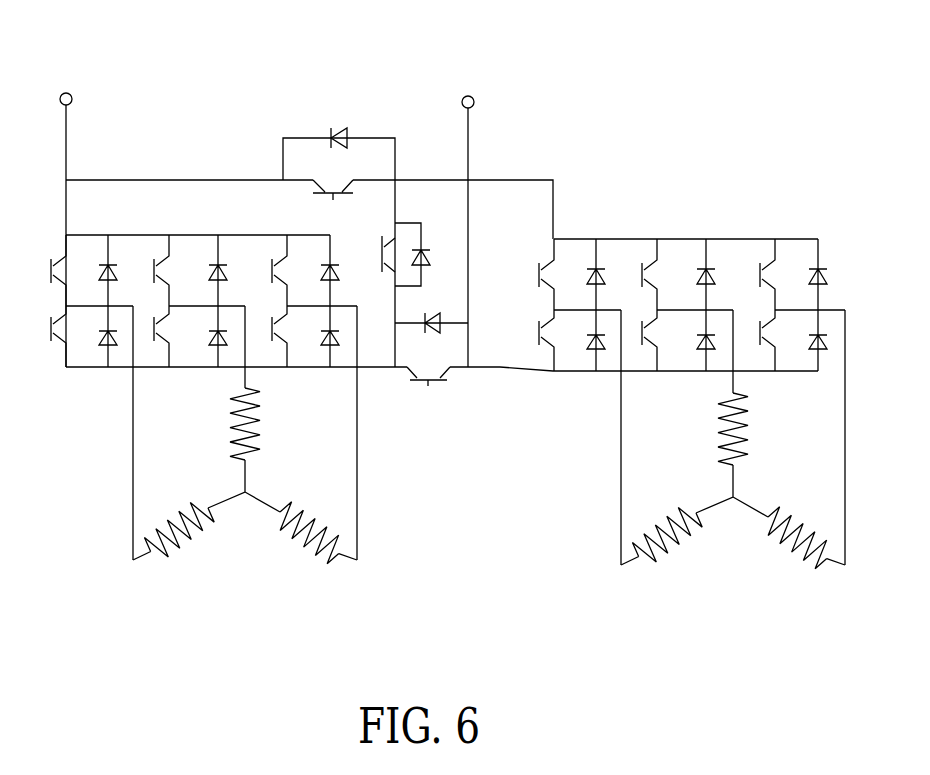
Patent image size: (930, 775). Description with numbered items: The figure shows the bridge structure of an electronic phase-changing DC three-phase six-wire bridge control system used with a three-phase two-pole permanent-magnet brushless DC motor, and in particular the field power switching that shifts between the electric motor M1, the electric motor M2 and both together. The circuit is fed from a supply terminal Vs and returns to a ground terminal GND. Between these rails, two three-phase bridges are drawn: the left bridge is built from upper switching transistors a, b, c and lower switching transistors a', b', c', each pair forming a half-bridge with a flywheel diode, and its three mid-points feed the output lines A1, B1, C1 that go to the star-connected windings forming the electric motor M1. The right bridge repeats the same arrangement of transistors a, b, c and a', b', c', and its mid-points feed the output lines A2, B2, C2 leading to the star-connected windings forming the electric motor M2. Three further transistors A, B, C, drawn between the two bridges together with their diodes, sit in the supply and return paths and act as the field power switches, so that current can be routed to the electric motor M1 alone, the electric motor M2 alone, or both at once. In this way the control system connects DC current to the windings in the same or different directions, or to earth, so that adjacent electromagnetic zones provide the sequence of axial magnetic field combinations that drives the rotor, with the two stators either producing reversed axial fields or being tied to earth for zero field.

The supply voltage terminal Vs is at (64, 113).
The ground terminal GND is at (477, 207).
The upper switching transistor, phase a is at (286, 272).
The lower switching transistor, phase a a' is at (286, 333).
The upper switching transistor, phase b is at (393, 272).
The lower switching transistor, phase b b' is at (394, 334).
The upper switching transistor, phase c is at (512, 272).
The lower switching transistor, phase c c' is at (512, 333).
The transistor A is at (428, 397).
The transistor B with diode B is at (393, 254).
The transistor C is at (333, 209).
The output node A1 of first bridge A1 is at (112, 433).
The output node B1 of first bridge B1 is at (222, 356).
The output node C1 of first bridge C1 is at (336, 433).
The output node A2 of second bridge A2 is at (596, 437).
The output node B2 of second bridge B2 is at (703, 361).
The output node C2 of second bridge C2 is at (821, 437).
The electric motor M1 is at (245, 486).
The electric motor M2 is at (733, 492).